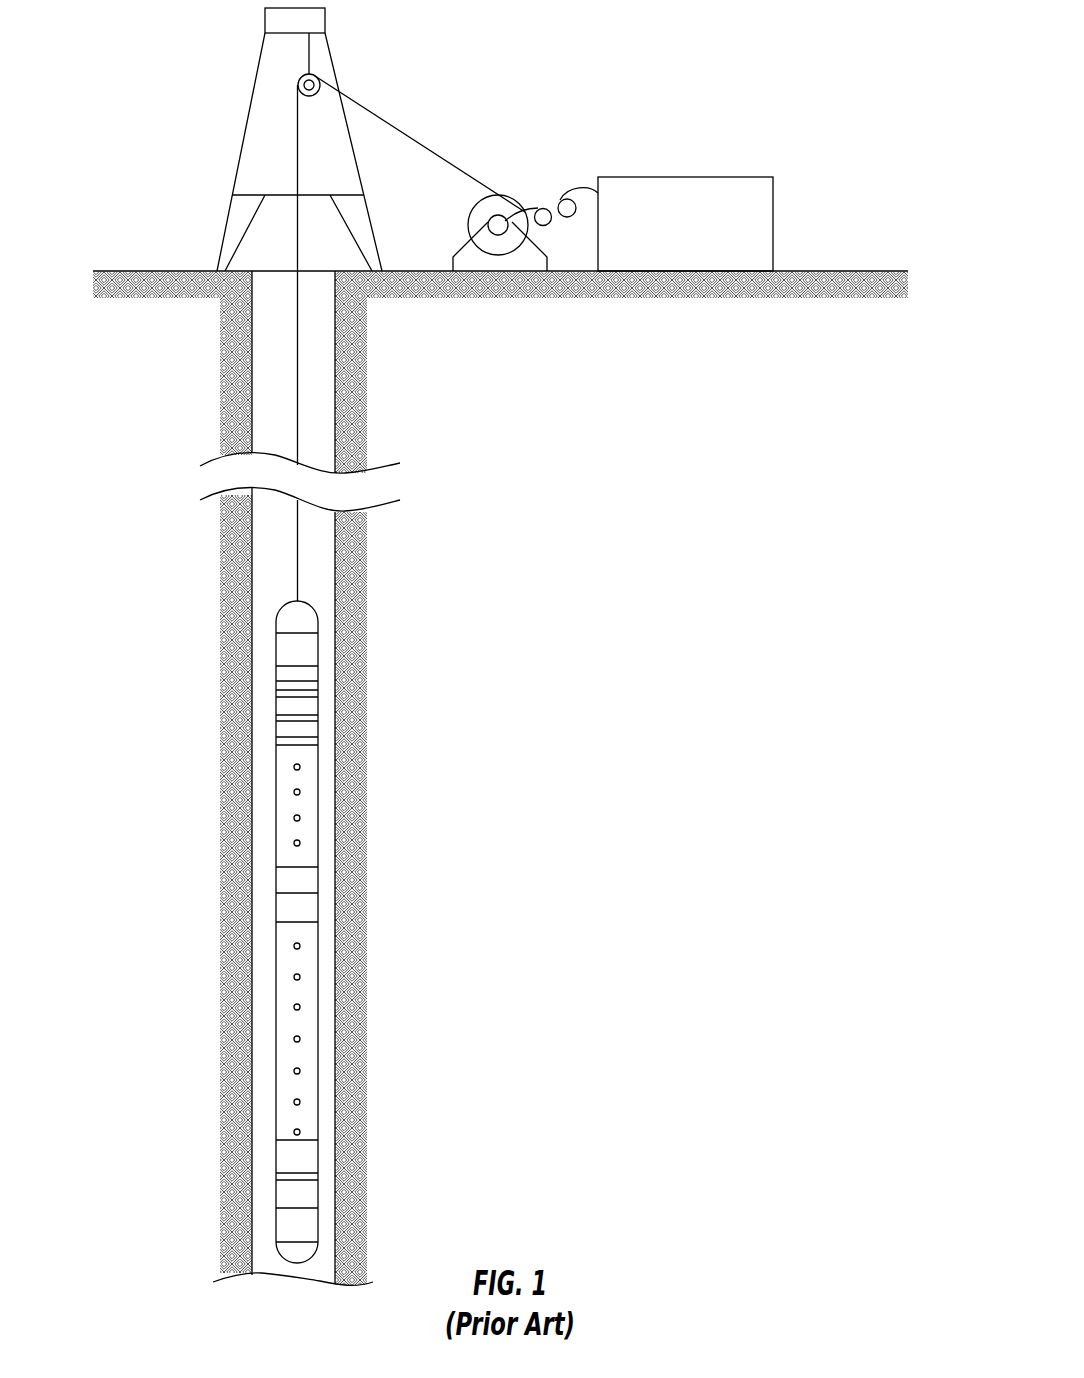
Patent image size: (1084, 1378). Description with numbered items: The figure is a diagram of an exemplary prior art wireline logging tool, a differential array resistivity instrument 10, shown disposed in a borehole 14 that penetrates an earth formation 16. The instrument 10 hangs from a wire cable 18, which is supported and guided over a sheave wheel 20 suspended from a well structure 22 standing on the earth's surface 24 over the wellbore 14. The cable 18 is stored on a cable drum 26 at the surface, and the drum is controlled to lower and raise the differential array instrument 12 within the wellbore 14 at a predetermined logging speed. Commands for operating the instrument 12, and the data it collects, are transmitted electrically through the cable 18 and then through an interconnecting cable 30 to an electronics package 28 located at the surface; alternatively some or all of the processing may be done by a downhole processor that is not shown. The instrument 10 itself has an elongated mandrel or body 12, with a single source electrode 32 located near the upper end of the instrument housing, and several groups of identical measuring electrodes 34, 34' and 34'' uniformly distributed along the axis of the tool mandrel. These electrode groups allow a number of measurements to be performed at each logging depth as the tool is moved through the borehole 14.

The differential array resistivity instrument 10 is at (296, 932).
The mandrel or body 12 is at (320, 766).
The borehole 14 is at (252, 362).
The earth formation 16 is at (446, 373).
The wire cable 18 is at (400, 127).
The sheave wheel 20 is at (297, 85).
The well structure 22 is at (237, 153).
The earth's surface 24 is at (182, 271).
The cable drum 26 is at (505, 195).
The electronics package 28 is at (758, 177).
The interconnecting cable 30 is at (552, 200).
The source electrode 32 is at (276, 668).
The measuring electrodes 34 is at (235, 733).
The measuring electrodes 34' is at (235, 901).
The measuring electrodes 34'' is at (235, 1175).